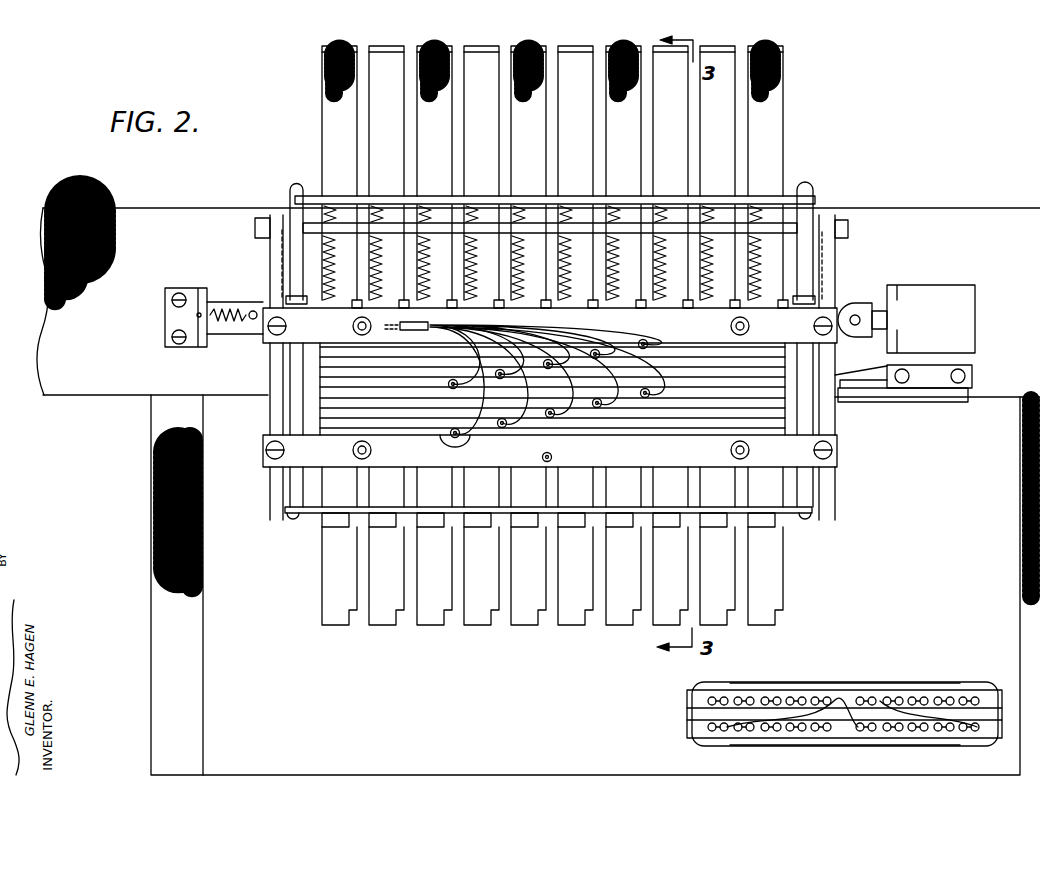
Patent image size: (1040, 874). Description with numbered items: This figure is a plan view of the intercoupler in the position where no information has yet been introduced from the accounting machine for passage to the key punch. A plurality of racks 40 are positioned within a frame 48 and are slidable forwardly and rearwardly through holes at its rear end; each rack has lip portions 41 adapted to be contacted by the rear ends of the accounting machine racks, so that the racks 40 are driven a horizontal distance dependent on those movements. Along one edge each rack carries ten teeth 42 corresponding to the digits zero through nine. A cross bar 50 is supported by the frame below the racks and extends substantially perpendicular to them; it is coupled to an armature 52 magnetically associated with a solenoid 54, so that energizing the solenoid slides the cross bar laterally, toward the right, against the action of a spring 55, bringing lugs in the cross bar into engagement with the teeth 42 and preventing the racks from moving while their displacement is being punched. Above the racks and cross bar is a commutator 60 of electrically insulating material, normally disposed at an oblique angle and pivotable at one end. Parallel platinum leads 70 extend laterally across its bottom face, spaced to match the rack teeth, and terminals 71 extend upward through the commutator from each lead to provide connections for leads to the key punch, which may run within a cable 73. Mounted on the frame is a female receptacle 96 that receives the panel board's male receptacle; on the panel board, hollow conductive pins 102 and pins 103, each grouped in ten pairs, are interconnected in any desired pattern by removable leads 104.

The rack 40 is at (376, 122).
The lip portion 41 is at (775, 52).
The teeth 42 is at (375, 212).
The frame 48 is at (814, 202).
The cross bar 50 is at (238, 334).
The armature 52 is at (876, 300).
The solenoid 54 is at (968, 320).
The spring 55 is at (233, 310).
The commutator 60 is at (294, 513).
The lead 70 is at (400, 393).
The terminal 71 is at (500, 428).
The cable 73 is at (404, 330).
The female receptacle 96 is at (713, 745).
The hollow conductive pin 102 is at (765, 731).
The hollow conductive pin 103 is at (752, 700).
The lead 104 is at (842, 690).